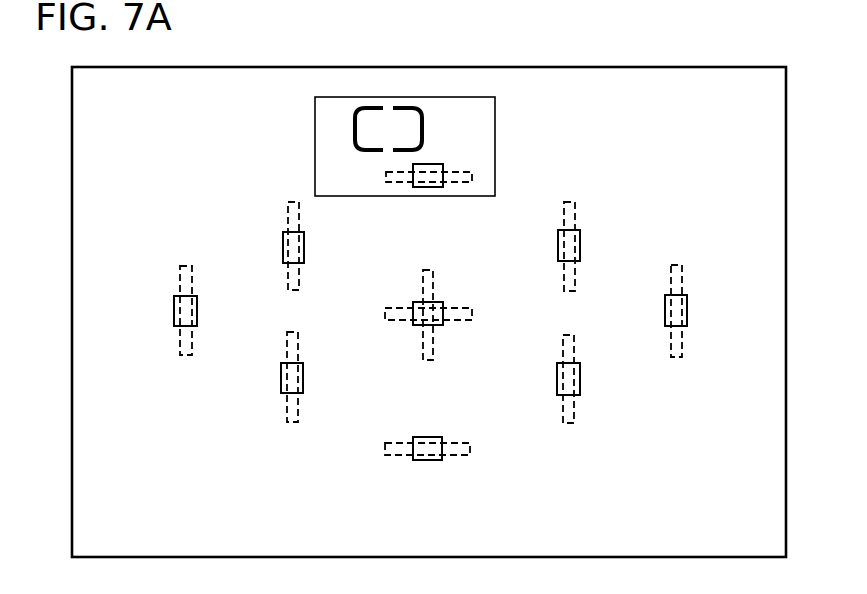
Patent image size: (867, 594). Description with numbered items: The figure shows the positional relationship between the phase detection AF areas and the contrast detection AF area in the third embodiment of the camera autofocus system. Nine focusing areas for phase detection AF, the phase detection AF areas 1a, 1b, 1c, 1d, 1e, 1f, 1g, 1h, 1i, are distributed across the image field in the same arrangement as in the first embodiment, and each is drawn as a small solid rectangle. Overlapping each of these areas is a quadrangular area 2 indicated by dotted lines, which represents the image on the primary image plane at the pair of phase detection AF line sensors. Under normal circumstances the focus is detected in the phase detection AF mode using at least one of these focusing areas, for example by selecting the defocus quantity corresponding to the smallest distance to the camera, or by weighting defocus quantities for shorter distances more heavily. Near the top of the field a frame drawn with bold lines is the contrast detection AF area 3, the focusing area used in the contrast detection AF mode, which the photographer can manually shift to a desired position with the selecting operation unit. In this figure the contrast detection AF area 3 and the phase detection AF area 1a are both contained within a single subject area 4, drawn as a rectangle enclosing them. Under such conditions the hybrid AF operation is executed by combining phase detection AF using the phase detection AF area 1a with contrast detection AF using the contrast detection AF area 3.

The phase detection AF area 1a is at (443, 165).
The phase detection AF area 1b is at (283, 252).
The phase detection AF area 1c is at (617, 230).
The phase detection AF area 1d is at (174, 307).
The phase detection AF area 1e is at (443, 303).
The phase detection AF area 1f is at (687, 312).
The phase detection AF area 1g is at (281, 373).
The phase detection AF area 1h is at (422, 437).
The phase detection AF area 1i is at (580, 377).
The quadrangular area 2 is at (577, 210).
The contrast detection AF area 3 is at (415, 108).
The subject area 4 is at (487, 97).